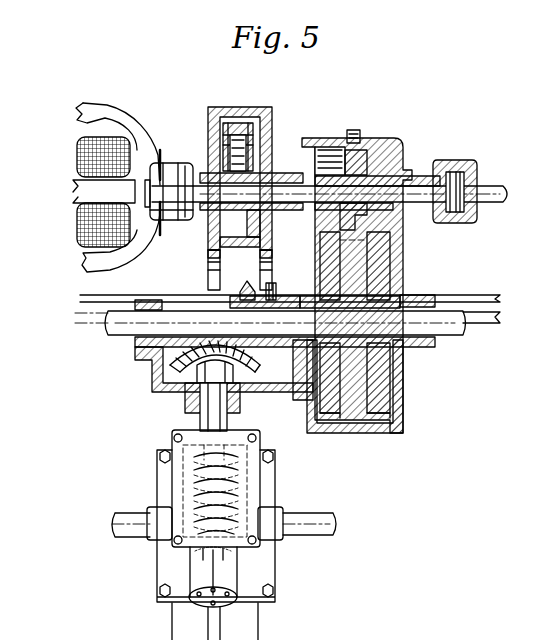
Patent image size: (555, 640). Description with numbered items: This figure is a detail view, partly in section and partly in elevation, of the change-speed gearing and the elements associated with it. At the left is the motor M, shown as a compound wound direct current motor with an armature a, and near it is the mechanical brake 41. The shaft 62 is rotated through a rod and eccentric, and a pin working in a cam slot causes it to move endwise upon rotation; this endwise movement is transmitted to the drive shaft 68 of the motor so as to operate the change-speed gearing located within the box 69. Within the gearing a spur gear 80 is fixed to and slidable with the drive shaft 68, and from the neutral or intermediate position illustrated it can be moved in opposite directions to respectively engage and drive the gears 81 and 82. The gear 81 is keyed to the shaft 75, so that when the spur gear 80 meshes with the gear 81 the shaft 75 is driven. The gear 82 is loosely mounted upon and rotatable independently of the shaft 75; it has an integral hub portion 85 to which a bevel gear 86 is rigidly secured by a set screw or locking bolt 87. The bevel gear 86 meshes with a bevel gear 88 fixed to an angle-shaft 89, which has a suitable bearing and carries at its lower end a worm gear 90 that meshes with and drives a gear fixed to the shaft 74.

The motor M is at (97, 104).
The armature a is at (120, 150).
The mechanical brake 41 is at (208, 140).
The shaft 62 is at (482, 186).
The drive shaft 68 is at (422, 180).
The change-speed gearing box 69 is at (333, 138).
The shaft 74 is at (312, 536).
The shaft 75 is at (463, 336).
The spur gear 80 is at (362, 160).
The gear 81 is at (386, 246).
The gear 82 is at (320, 238).
The hub portion 85 is at (280, 345).
The bevel gear 86 is at (238, 289).
The set screw or locking bolt 87 is at (272, 290).
The bevel gear 88 is at (152, 384).
The angle-shaft 89 is at (200, 406).
The worm gear 90 is at (195, 478).